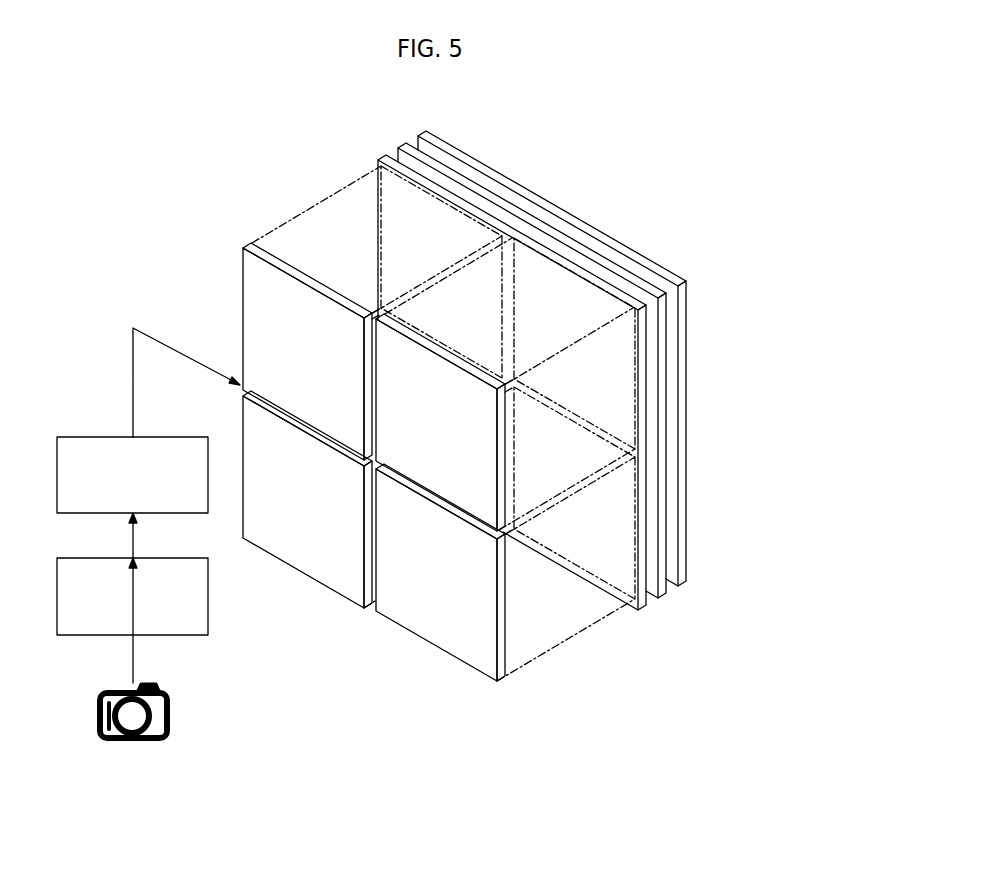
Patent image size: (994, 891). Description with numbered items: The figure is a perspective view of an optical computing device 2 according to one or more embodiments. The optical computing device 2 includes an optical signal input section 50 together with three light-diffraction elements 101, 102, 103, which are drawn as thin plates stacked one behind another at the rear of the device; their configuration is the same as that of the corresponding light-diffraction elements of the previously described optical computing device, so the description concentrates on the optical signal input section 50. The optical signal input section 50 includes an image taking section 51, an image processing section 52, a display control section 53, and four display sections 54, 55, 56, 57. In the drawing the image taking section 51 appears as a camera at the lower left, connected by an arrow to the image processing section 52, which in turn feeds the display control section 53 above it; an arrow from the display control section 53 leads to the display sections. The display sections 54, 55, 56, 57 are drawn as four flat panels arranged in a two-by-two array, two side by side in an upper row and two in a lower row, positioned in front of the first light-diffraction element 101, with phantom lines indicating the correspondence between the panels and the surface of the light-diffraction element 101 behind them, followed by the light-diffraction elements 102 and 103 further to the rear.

The optical computing device 2 is at (608, 141).
The optical signal input section 50 is at (328, 688).
The image taking section 51 is at (172, 715).
The image processing section 52 is at (168, 558).
The display control section 53 is at (168, 437).
The display section 54 is at (293, 365).
The display section 55 is at (425, 440).
The display section 56 is at (293, 515).
The display section 57 is at (426, 591).
The light-diffraction element 101 is at (378, 160).
The light-diffraction element 102 is at (398, 148).
The light-diffraction element 103 is at (418, 136).